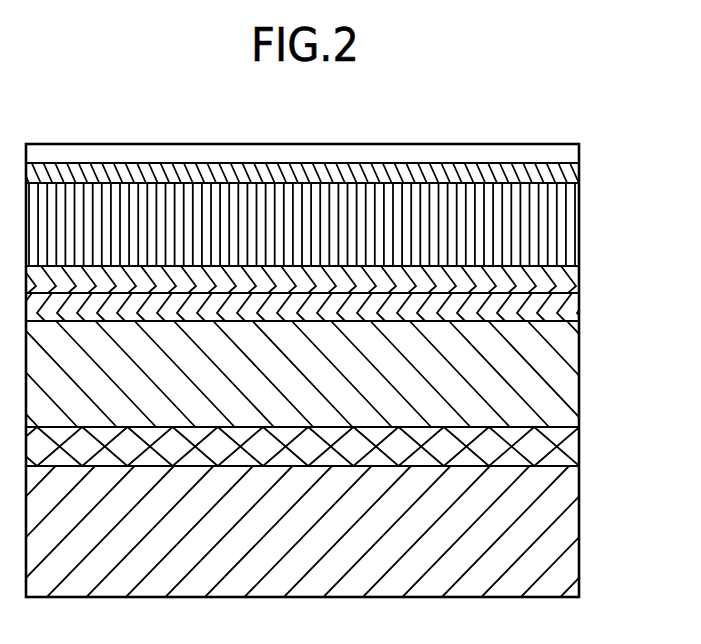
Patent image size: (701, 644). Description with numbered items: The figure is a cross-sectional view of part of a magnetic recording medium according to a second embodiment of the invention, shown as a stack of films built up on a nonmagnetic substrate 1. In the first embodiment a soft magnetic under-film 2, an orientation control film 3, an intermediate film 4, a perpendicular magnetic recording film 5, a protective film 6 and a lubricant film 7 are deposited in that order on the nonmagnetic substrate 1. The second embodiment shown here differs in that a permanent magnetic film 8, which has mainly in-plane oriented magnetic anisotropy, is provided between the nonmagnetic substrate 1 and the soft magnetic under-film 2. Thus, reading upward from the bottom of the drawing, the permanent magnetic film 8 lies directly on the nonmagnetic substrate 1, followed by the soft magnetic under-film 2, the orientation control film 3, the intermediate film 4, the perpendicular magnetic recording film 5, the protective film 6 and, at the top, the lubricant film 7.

The nonmagnetic substrate 1 is at (579, 527).
The soft magnetic under-film 2 is at (579, 378).
The orientation control film 3 is at (579, 313).
The intermediate film 4 is at (579, 268).
The perpendicular magnetic recording film 5 is at (579, 222).
The protective film 6 is at (579, 170).
The lubricant film 7 is at (579, 153).
The permanent magnetic film 8 is at (579, 441).